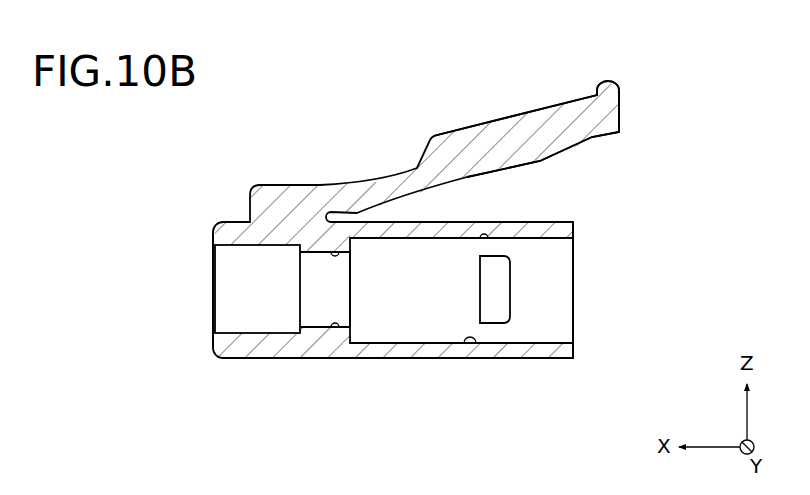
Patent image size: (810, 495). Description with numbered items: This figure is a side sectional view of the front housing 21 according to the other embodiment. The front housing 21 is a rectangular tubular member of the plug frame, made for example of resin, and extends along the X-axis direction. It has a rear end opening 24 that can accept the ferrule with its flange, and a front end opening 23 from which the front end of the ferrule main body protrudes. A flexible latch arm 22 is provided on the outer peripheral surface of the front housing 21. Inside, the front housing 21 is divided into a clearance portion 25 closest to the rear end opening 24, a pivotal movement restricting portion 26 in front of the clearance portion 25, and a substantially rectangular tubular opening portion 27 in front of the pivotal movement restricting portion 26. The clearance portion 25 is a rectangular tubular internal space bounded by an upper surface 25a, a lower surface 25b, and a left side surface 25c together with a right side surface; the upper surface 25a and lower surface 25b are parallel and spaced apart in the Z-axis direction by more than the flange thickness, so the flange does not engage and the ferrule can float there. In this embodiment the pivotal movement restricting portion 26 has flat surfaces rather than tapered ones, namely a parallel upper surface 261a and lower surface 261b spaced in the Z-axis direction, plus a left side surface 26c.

The front housing 21 is at (217, 358).
The latch arm 22 is at (557, 108).
The front end opening 23 is at (212, 302).
The rear end opening 24 is at (575, 290).
The clearance portion 25 is at (402, 265).
The upper surface 25a is at (488, 237).
The lower surface 25b is at (472, 345).
The left side surface 25c is at (543, 326).
The pivotal movement restricting portion 26 is at (320, 268).
The upper surface 261a is at (336, 250).
The lower surface 261b is at (337, 329).
The left side surface 26c is at (351, 288).
The opening portion 27 is at (227, 268).